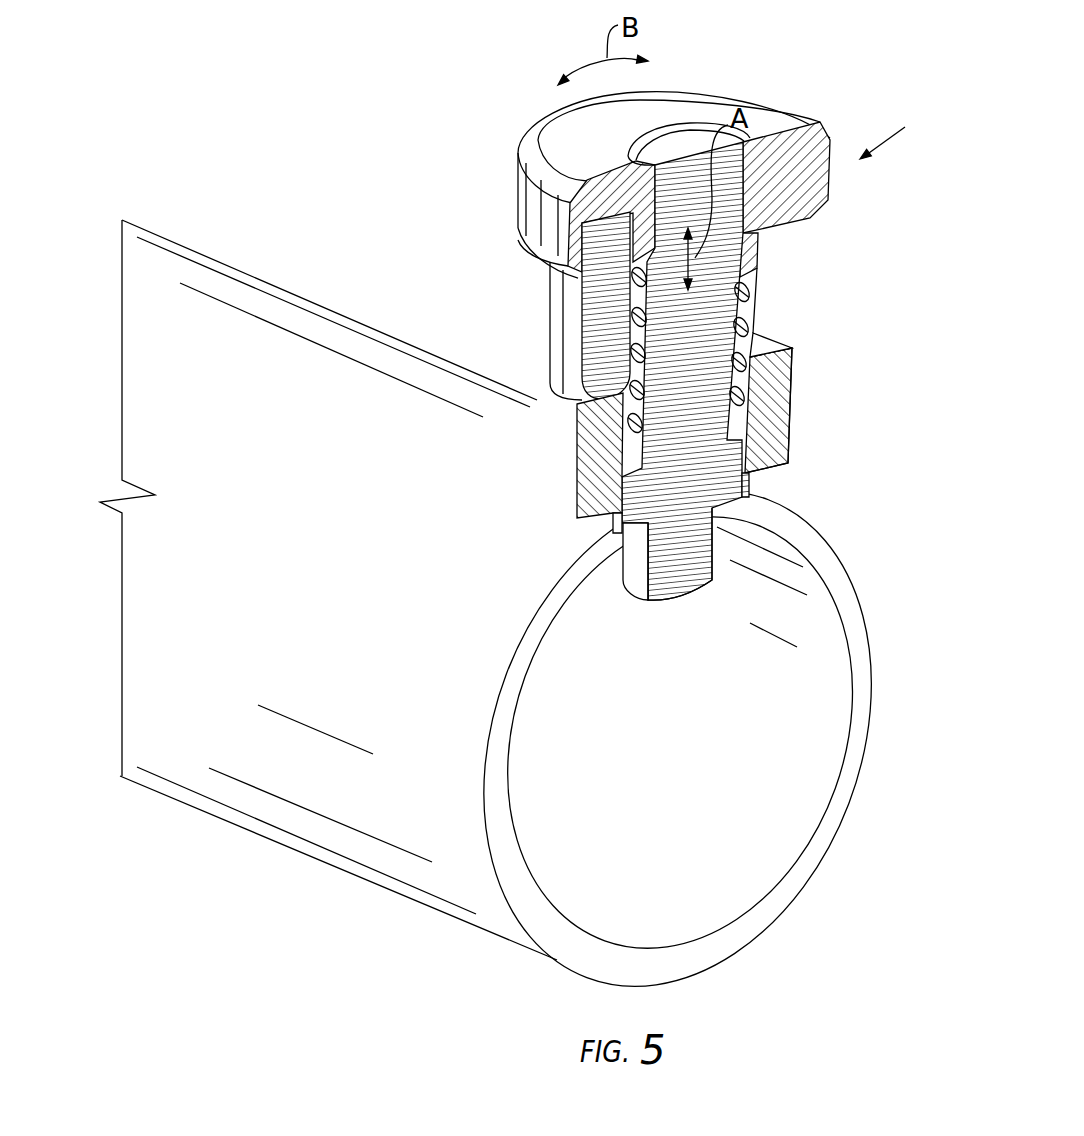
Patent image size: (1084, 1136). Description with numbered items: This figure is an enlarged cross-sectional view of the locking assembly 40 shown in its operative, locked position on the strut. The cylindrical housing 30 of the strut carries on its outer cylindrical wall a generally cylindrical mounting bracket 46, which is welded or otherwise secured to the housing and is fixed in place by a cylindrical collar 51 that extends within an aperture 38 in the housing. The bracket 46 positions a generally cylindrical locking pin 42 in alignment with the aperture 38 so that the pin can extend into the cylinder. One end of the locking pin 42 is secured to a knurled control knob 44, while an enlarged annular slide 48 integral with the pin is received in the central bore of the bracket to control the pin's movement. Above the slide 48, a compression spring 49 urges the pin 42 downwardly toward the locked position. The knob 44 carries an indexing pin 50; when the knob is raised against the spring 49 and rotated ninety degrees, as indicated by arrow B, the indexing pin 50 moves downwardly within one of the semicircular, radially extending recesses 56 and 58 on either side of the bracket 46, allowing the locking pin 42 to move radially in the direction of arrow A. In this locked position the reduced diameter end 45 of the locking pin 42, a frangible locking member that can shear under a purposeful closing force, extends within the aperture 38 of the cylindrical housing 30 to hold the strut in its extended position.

The cylindrical housing 30 is at (347, 318).
The aperture 38 is at (742, 511).
The locking assembly 40 is at (896, 135).
The locking pin 42 is at (727, 275).
The knurled control knob 44 is at (821, 122).
The end of pin 45 is at (680, 560).
The mounting bracket 46 is at (797, 369).
The annular slide 48 is at (737, 457).
The compression spring 49 is at (753, 287).
The indexing pin 50 is at (607, 312).
The cylindrical collar 51 is at (750, 483).
The recess 56 is at (557, 347).
The recess 58 is at (767, 343).